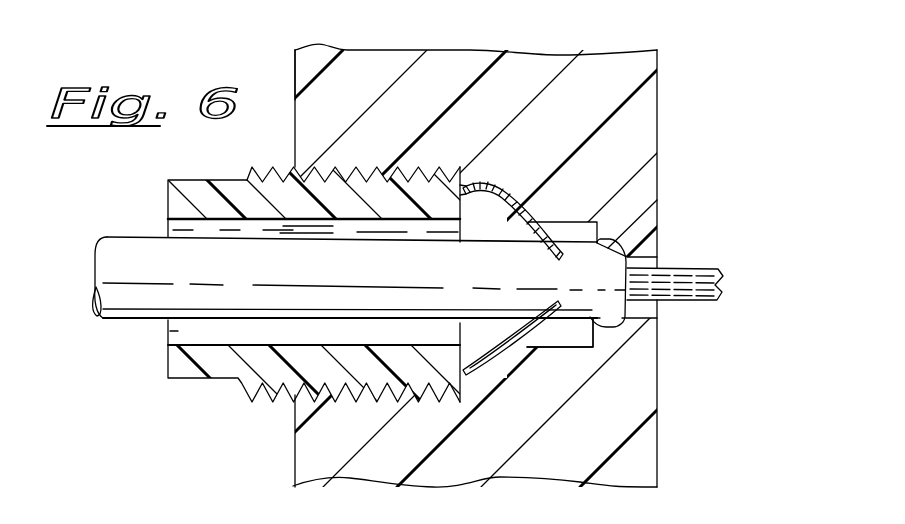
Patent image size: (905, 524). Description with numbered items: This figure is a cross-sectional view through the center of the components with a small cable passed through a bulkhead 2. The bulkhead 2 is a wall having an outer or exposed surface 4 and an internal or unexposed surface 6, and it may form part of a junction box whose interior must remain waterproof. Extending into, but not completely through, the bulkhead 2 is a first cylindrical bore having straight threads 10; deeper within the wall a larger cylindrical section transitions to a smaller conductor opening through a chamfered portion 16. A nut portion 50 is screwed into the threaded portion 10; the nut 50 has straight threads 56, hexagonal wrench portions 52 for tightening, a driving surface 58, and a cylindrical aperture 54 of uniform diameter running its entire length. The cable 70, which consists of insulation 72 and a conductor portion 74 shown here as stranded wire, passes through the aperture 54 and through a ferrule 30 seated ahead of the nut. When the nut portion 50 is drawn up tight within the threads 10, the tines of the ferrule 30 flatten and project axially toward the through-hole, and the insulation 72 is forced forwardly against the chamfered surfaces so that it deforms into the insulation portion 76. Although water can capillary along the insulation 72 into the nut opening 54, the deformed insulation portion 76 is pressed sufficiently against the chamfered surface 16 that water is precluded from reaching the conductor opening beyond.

The bulkhead 2 is at (455, 44).
The outer or exposed surface 4 is at (293, 70).
The internal or unexposed surface 6 is at (657, 137).
The straight threads 10 is at (348, 167).
The chamfered portion 16 is at (596, 348).
The ferrule 30 is at (504, 195).
The nut portion 50 is at (190, 386).
The hexagonal wrench portions 52 is at (187, 180).
The cylindrical aperture 54 is at (173, 331).
The straight threads 56 is at (268, 167).
The driving surface 58 is at (472, 186).
The cable 70 is at (110, 328).
The insulation 72 is at (123, 252).
The conductor portion 74 is at (676, 267).
The insulation portion 76 is at (610, 247).